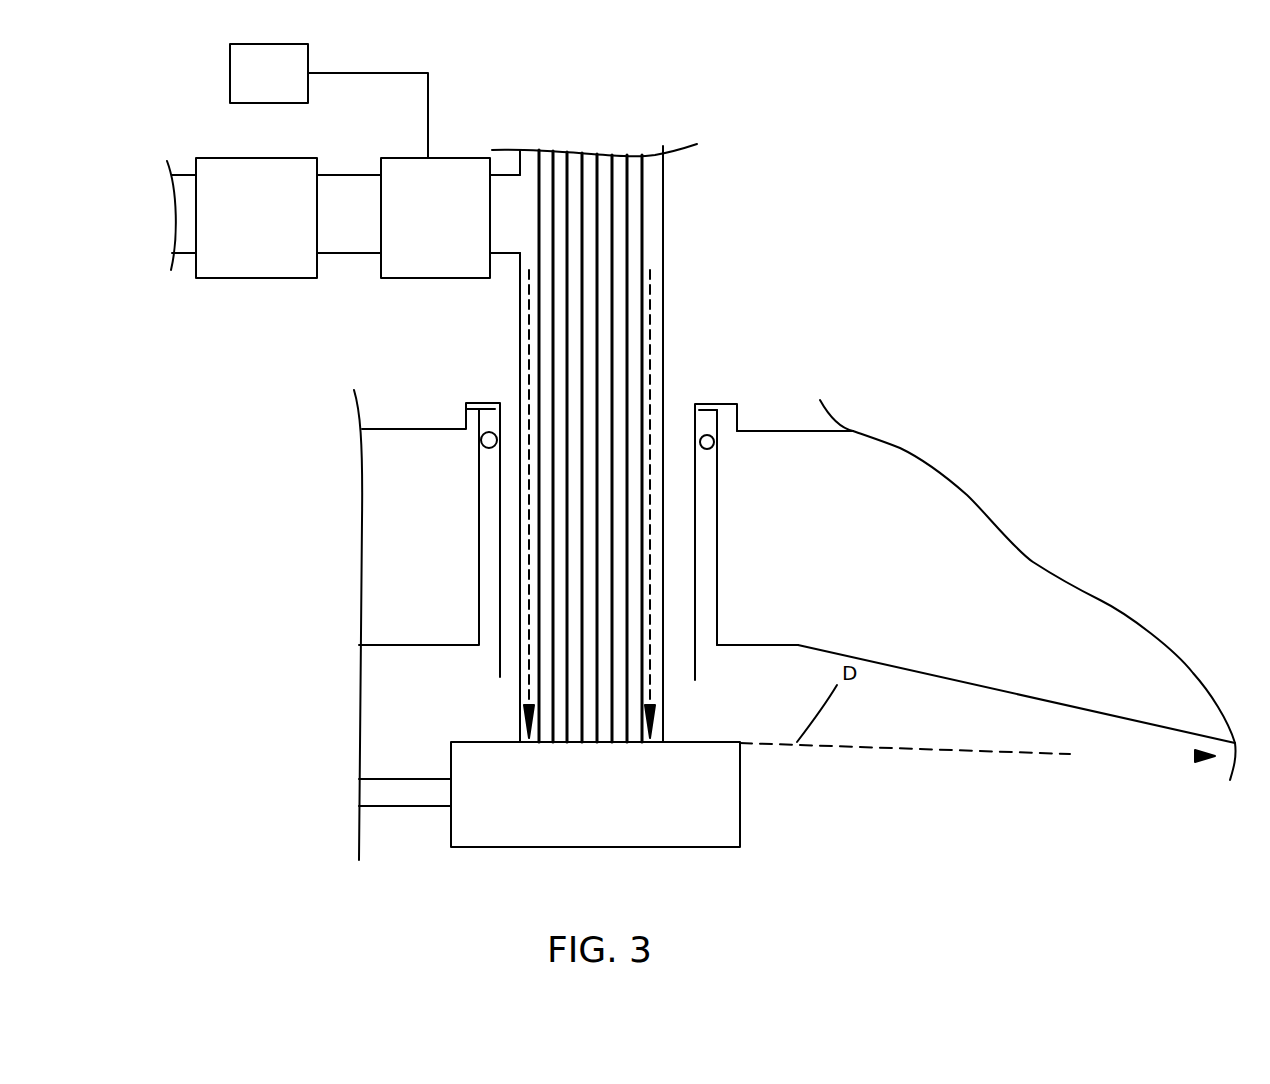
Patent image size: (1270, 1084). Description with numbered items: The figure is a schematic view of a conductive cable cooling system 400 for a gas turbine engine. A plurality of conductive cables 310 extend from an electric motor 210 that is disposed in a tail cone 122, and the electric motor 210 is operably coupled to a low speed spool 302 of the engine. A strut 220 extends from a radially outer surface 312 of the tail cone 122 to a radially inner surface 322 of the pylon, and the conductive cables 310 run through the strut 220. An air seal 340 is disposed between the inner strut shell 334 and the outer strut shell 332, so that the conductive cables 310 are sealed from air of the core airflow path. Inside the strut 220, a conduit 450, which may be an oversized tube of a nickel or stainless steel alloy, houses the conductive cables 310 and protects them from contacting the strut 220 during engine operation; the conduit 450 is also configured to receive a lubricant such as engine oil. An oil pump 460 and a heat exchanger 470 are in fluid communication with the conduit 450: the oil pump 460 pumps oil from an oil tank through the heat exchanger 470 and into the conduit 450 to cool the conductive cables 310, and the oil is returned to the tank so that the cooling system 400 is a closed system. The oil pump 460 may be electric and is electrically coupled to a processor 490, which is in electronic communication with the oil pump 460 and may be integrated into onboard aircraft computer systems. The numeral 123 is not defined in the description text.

The processor 490 is at (285, 87).
The heat exchanger 470 is at (272, 231).
The oil pump 460 is at (451, 231).
The conduit 450 is at (665, 297).
The conductive cables 310 is at (628, 332).
The conductive cable cooling system 400 is at (913, 229).
The air seal 340 is at (485, 435).
The low speed spool 302 is at (370, 790).
The electric motor 210 is at (612, 806).
The strut 220 is at (735, 538).
The radially inner surface of pylon 322 is at (717, 410).
The outer strut shell 332 is at (719, 523).
The inner strut shell 334 is at (695, 617).
The radially outer surface of tail cone 312 is at (835, 653).
The shoulder 123 is at (747, 431).
The tail cone 122 is at (992, 688).